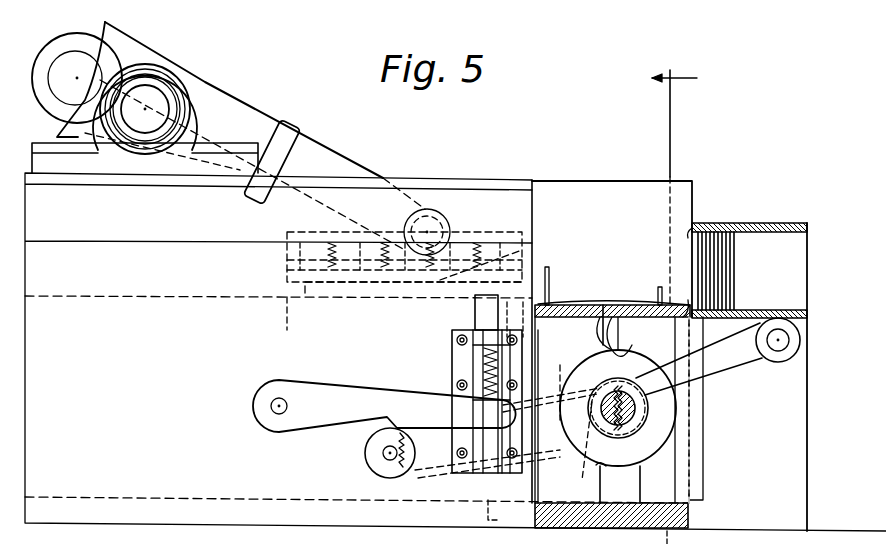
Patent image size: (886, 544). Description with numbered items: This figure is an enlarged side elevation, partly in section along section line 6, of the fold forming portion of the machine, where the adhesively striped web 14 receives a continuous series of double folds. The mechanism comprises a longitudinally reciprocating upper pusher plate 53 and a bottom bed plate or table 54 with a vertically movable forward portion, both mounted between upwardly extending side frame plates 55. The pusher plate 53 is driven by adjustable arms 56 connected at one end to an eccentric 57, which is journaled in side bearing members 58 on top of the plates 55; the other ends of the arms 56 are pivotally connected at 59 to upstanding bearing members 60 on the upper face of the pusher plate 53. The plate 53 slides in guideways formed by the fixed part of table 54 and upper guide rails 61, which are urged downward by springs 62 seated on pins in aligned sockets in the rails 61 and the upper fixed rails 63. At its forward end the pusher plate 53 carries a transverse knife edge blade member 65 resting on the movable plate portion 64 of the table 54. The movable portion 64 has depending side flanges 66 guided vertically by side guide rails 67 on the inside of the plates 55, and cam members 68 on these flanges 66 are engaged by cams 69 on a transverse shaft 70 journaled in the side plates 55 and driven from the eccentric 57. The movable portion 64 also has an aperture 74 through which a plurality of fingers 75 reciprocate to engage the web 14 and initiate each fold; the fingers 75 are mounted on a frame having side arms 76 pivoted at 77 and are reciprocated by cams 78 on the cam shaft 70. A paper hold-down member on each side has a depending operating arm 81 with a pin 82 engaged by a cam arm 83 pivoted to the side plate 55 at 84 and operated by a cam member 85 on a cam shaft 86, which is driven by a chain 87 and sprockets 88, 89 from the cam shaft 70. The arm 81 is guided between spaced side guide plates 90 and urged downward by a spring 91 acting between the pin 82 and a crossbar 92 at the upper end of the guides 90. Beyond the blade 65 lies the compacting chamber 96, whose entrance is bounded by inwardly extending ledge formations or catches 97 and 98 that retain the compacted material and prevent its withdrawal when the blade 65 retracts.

The section line 6 is at (674, 295).
The adhesively striped web 14 is at (118, 296).
The upper pusher plate 53 is at (533, 266).
The bottom bed plate or table 54 is at (287, 325).
The side frame plates 55 is at (455, 352).
The adjustable arms 56 is at (307, 160).
The eccentric 57 is at (65, 62).
The side bearing members 58 is at (178, 63).
The pivot connection 59 is at (428, 216).
The upstanding bearing members 60 is at (470, 198).
The upper guide rails 61 is at (287, 268).
The springs 62 is at (312, 240).
The upper fixed rails 63 is at (285, 242).
The movable plate portion 64 is at (603, 303).
The knife edge blade member 65 is at (550, 282).
The depending side flanges 66 is at (660, 466).
The side guide rails 67 is at (512, 500).
The cam members 68 is at (659, 297).
The cams 69 is at (592, 366).
The transverse shaft 70 is at (634, 420).
The aperture 74 is at (618, 300).
The fingers 75 is at (601, 322).
The side arms 76 is at (716, 358).
The pivot 77 is at (776, 352).
The cams 78 is at (652, 402).
The depending operating arm 81 is at (475, 313).
The pin 82 is at (458, 385).
The cam arm 83 is at (433, 416).
The pivot 84 is at (278, 415).
The cam member 85 is at (397, 476).
The cam shaft 86 is at (383, 456).
The chain 87 is at (549, 396).
The sprocket 88 is at (585, 464).
The sprocket 89 is at (420, 468).
The side guide plates 90 is at (506, 470).
The spring 91 is at (482, 360).
The crossbar 92 is at (457, 340).
The compacting chamber 96 is at (778, 240).
The ledge formation or catch 97 is at (697, 230).
The ledge formation or catch 98 is at (688, 303).